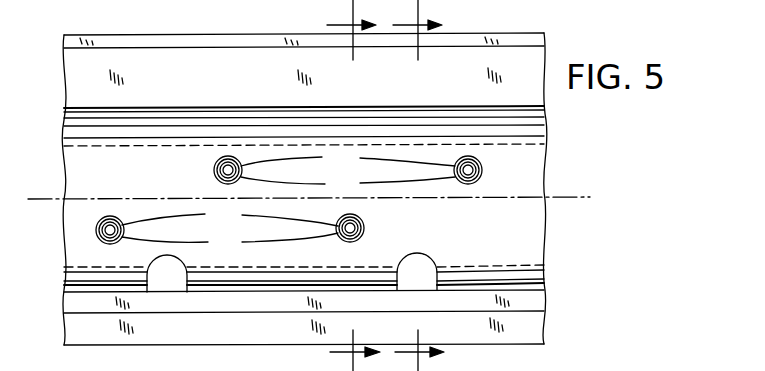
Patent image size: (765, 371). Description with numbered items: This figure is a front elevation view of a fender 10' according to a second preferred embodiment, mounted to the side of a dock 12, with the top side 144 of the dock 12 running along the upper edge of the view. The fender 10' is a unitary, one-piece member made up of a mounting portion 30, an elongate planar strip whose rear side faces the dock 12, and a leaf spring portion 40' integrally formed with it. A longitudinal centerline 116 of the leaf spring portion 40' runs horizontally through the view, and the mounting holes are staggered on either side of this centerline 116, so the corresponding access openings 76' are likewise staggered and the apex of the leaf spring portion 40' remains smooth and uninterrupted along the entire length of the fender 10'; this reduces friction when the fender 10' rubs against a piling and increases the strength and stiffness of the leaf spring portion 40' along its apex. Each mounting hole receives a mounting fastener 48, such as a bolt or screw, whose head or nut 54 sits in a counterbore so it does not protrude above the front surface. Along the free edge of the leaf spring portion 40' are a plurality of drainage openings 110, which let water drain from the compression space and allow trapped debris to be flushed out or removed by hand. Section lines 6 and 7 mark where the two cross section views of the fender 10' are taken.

The fender 10' is at (331, 189).
The dock 12 is at (118, 47).
The top side 144 is at (178, 37).
The longitudinal centerline 116 is at (48, 188).
The leaf spring portion 40' is at (332, 251).
The mounting portion 30 is at (527, 296).
The drainage openings 110 is at (163, 276).
The mounting fastener 48 is at (214, 170).
The access openings 76' is at (288, 187).
The head or nut 54 is at (288, 211).
The section line 6- 6 is at (353, 185).
The section line 7- 7 is at (418, 185).